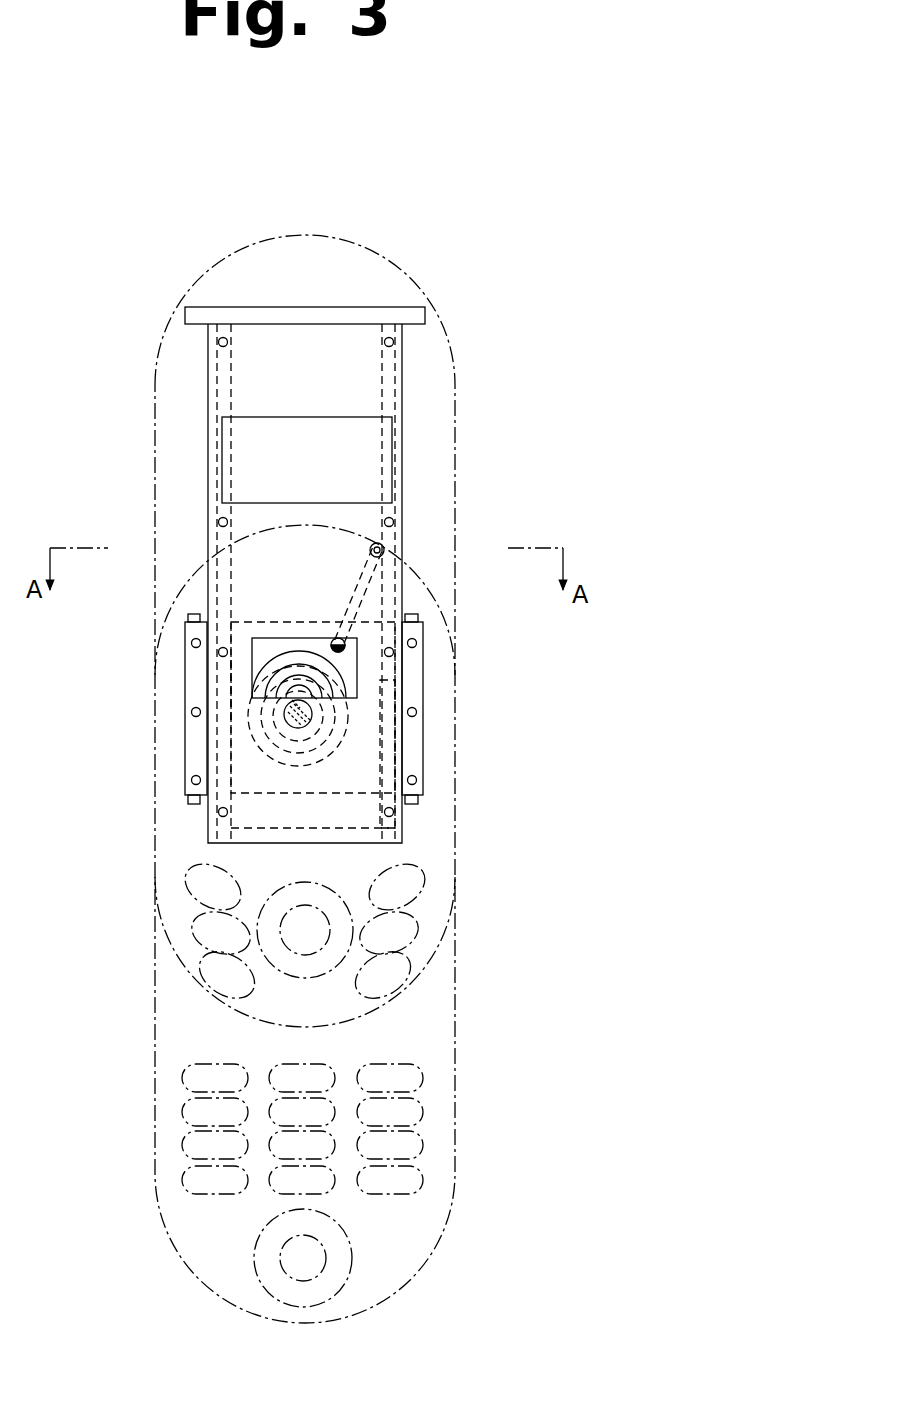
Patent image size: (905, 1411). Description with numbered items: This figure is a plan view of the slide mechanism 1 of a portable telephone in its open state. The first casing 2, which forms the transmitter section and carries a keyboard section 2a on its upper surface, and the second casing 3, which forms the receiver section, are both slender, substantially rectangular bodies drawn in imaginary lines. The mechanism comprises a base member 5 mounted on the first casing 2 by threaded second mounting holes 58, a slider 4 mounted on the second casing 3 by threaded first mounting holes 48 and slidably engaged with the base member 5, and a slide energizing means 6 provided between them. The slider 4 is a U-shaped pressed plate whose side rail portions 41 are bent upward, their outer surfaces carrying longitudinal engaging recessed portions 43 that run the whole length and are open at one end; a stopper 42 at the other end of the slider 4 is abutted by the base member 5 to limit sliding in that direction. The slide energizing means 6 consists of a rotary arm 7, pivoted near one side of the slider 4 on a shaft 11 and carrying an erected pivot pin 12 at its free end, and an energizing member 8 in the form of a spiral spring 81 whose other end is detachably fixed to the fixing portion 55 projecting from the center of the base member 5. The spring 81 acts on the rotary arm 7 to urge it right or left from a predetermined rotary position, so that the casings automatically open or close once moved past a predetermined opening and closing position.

The slide mechanism 1 is at (548, 451).
The first casing 2 is at (452, 1193).
The keyboard section 2a is at (183, 1112).
The second casing 3 is at (425, 968).
The slider 4 is at (200, 435).
The base member 5 is at (180, 745).
The slide energizing means 6 is at (240, 752).
The rotary arm 7 is at (400, 622).
The energizing member 8 is at (227, 689).
The shaft 11 is at (385, 549).
The pivot pin 12 is at (346, 645).
The rail portion 41 is at (395, 402).
The stopper 42 is at (425, 317).
The engaging recessed portion 43 is at (208, 355).
The first mounting hole 48 is at (219, 520).
The fixing portion 55 is at (324, 732).
The second mounting hole 58 is at (191, 712).
The spring 81 is at (387, 690).